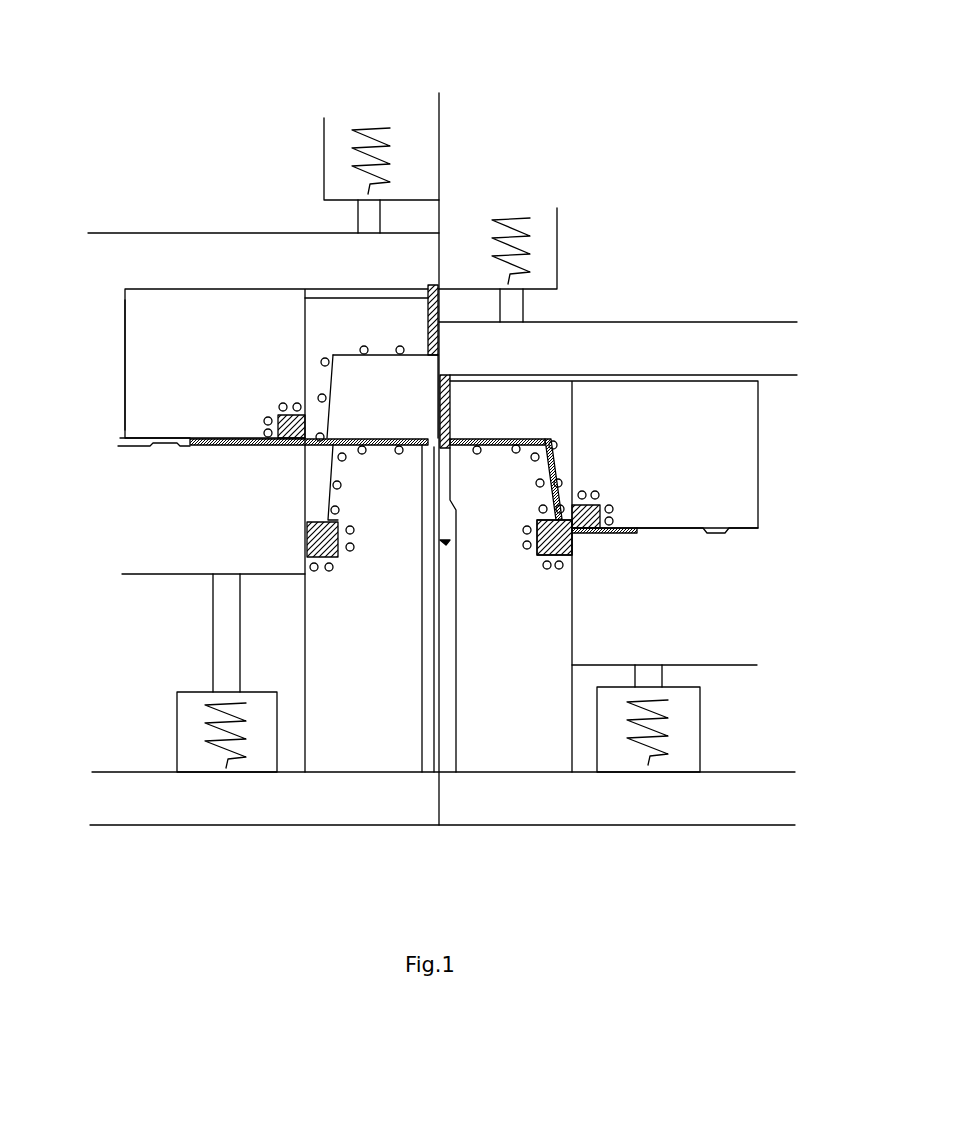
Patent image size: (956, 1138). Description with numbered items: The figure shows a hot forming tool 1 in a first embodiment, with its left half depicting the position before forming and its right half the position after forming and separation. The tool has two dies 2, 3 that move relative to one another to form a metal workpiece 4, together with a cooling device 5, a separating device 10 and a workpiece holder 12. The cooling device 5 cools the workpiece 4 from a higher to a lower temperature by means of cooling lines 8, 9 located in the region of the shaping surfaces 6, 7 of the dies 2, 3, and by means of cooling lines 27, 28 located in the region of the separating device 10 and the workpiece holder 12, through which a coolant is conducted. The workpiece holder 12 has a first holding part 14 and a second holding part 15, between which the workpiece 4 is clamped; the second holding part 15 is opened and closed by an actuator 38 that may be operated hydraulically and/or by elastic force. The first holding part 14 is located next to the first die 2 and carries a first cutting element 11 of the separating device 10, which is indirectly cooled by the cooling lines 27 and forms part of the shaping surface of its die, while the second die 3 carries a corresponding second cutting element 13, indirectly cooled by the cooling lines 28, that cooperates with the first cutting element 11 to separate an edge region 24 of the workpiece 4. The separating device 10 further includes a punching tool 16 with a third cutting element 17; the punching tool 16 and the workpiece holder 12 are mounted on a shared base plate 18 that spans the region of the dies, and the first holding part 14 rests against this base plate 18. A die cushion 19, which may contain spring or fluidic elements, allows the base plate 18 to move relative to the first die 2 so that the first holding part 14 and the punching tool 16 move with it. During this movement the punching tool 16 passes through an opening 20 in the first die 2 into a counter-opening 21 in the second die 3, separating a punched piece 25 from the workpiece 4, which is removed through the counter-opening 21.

The hot forming tool 1 is at (150, 135).
The first die 2 is at (320, 328).
The second die 3 is at (360, 507).
The metal workpiece 4 is at (370, 432).
The cooling device 5 is at (290, 368).
The shaping surface 6 is at (397, 358).
The shaping surface 7 is at (327, 475).
The cooling lines 8 is at (292, 368).
The cooling lines 9 is at (365, 457).
The separating device 10 is at (180, 393).
The first cutting element 11 is at (277, 416).
The workpiece holder 12 is at (112, 418).
The second cutting element 13 is at (340, 560).
The first holding part 14 is at (135, 400).
The second holding part 15 is at (130, 560).
The punching tool 16 is at (428, 283).
The third cutting element 17 is at (428, 296).
The base plate 18 is at (110, 248).
The die cushion 19 is at (357, 103).
The opening 20 is at (410, 358).
The counter-opening 21 is at (424, 492).
The edge region 24 is at (600, 537).
The punched piece 25 is at (445, 545).
The cooling lines 27 is at (283, 402).
The cooling lines 28 is at (357, 530).
The actuator 38 is at (175, 678).